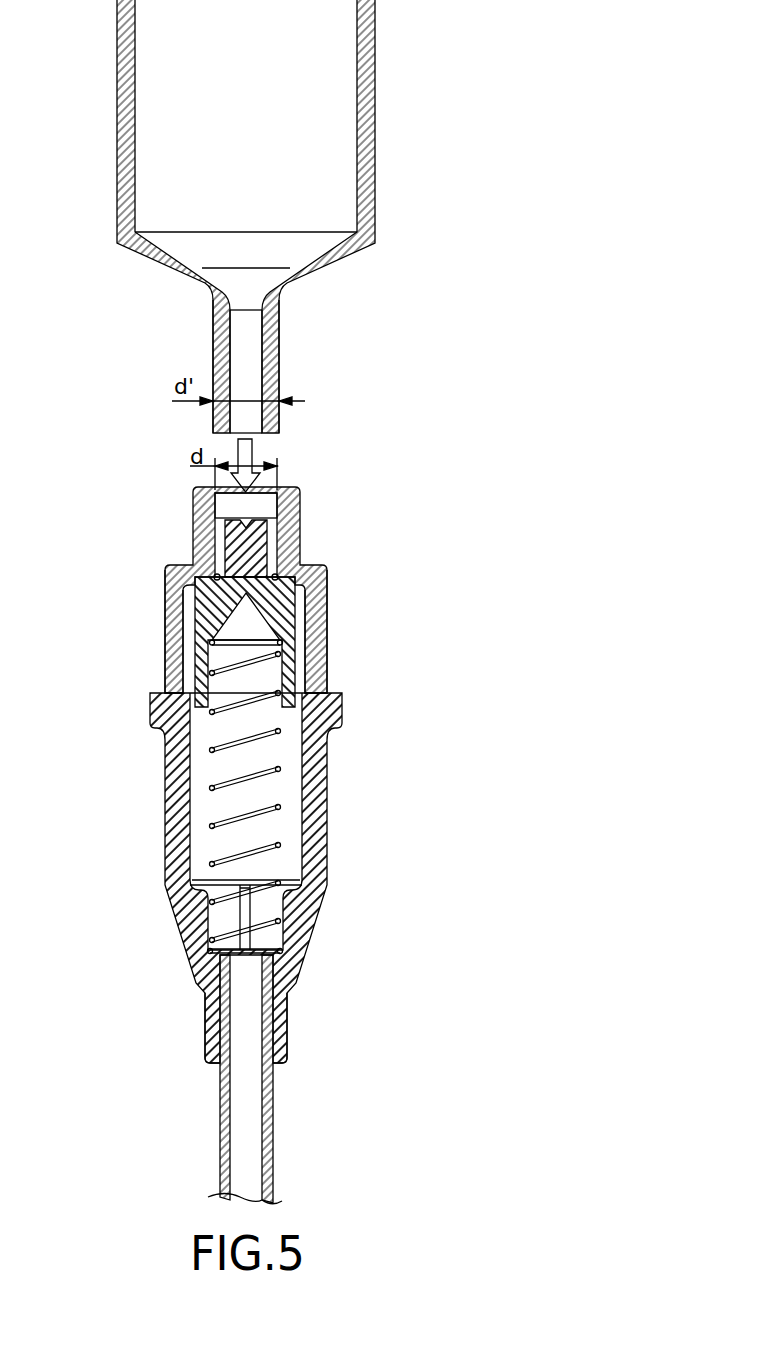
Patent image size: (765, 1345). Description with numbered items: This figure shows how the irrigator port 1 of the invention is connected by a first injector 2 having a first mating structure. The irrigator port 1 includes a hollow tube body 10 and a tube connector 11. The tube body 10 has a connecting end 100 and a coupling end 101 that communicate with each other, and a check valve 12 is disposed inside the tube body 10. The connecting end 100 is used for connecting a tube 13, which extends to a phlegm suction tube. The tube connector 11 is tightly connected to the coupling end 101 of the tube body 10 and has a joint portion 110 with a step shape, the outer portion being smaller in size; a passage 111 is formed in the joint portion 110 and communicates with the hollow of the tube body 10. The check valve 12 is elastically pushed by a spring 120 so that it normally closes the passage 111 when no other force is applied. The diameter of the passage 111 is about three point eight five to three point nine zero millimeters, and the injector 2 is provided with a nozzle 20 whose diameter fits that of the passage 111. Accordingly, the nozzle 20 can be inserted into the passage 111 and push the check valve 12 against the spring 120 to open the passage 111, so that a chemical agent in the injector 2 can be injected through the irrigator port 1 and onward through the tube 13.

The irrigator port 1 is at (282, 839).
The injector 2 is at (365, 103).
The nozzle 20 is at (270, 365).
The tube body 10 is at (325, 803).
The connecting end 100 is at (288, 1015).
The coupling end 101 is at (167, 636).
The tube connector 11 is at (327, 650).
The joint portion 110 is at (197, 535).
The passage 111 is at (263, 508).
The check valve 12 is at (327, 607).
The spring 120 is at (212, 826).
The tube 13 is at (218, 1120).